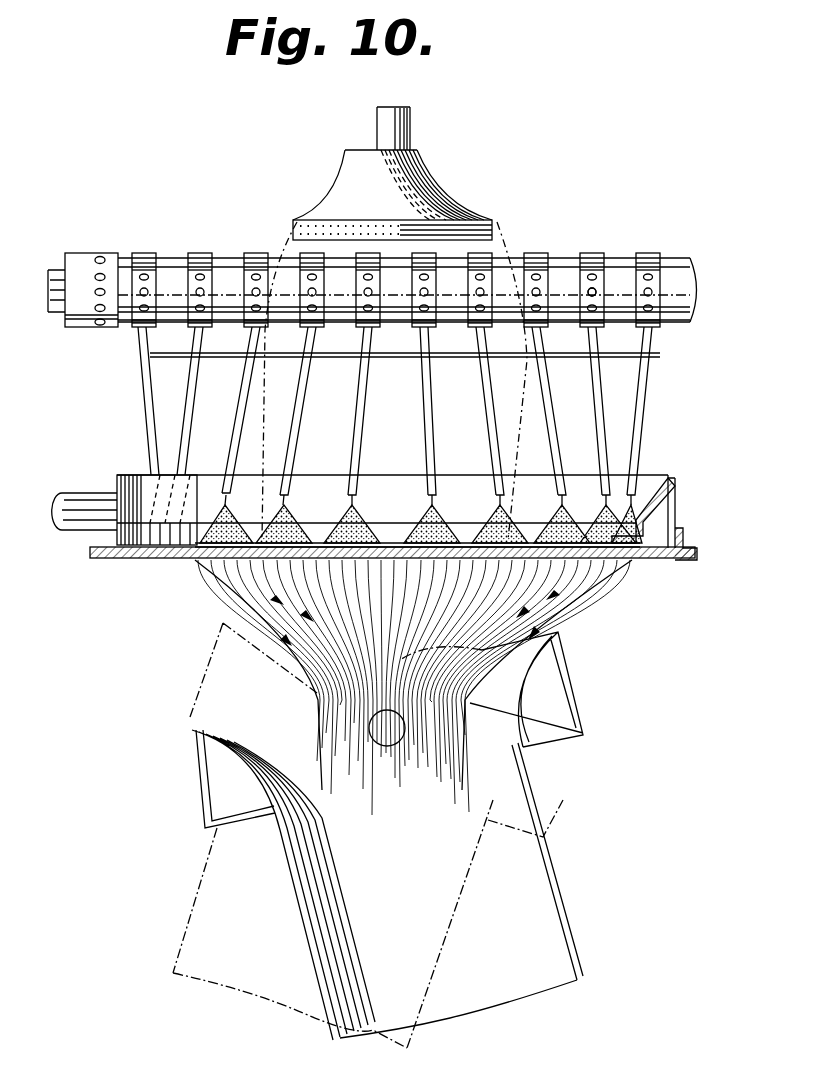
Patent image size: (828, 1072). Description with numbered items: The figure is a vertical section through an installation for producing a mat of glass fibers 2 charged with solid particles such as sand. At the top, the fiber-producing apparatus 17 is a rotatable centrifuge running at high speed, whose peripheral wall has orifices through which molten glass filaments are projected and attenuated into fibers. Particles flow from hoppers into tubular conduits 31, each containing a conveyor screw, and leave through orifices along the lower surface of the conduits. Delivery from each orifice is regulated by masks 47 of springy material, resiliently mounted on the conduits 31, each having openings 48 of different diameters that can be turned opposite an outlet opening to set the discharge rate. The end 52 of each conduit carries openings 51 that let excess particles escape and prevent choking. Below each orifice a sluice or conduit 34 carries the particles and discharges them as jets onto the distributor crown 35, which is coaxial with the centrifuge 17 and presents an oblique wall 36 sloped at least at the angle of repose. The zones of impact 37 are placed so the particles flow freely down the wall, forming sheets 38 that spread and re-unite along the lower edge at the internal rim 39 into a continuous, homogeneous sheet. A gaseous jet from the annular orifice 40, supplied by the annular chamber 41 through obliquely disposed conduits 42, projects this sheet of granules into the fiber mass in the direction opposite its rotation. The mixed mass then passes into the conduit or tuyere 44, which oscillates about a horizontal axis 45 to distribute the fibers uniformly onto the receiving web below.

The glass fibers 2 is at (523, 435).
The fiber production apparatus 17 is at (445, 192).
The tubular conduits 31 is at (344, 300).
The sluice or conduit 34 is at (237, 412).
The distributor crown 35 is at (684, 504).
The oblique wall 36 is at (658, 475).
The zones of impact 37 is at (364, 490).
The sheets 38 is at (298, 489).
The internal rim 39 is at (590, 560).
The annular orifice 40 is at (617, 560).
The annular chamber 41 is at (647, 522).
The conduits 42 is at (76, 504).
The conduit or tuyere 44 is at (308, 938).
The horizontal axis 45 is at (387, 746).
The masks 47 is at (591, 262).
The openings 48 is at (590, 292).
The openings 51 is at (108, 275).
The end of conduit 52 is at (77, 263).